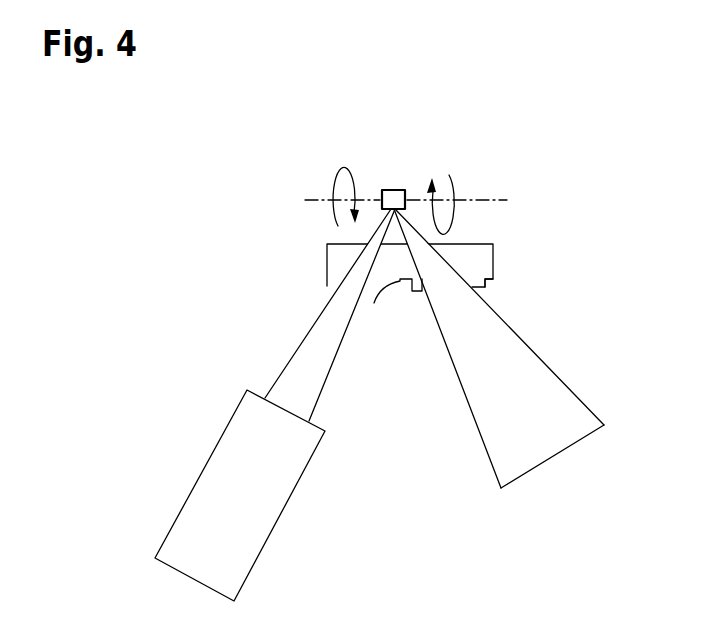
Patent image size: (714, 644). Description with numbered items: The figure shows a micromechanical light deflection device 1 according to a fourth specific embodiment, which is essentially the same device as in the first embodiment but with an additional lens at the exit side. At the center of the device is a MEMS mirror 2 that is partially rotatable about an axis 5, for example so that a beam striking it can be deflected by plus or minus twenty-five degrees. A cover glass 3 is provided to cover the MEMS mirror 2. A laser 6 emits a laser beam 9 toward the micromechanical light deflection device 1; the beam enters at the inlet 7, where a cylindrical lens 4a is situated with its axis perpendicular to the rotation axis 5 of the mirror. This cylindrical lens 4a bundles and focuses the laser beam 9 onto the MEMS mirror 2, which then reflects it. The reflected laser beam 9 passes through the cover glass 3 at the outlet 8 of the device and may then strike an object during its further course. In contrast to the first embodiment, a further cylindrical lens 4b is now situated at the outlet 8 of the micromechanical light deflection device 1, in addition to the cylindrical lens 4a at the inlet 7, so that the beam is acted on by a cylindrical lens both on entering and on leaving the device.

The micromechanical light deflection device 1 is at (248, 222).
The MEMS mirror 2 is at (389, 188).
The cover glass 3 is at (492, 262).
The cylindrical lens 4a is at (390, 294).
The cylindrical lens 4b is at (487, 282).
The axis 5 is at (490, 197).
The laser 6 is at (203, 462).
The inlet 7 is at (310, 294).
The outlet 8 is at (578, 327).
The laser beam 9 is at (570, 474).